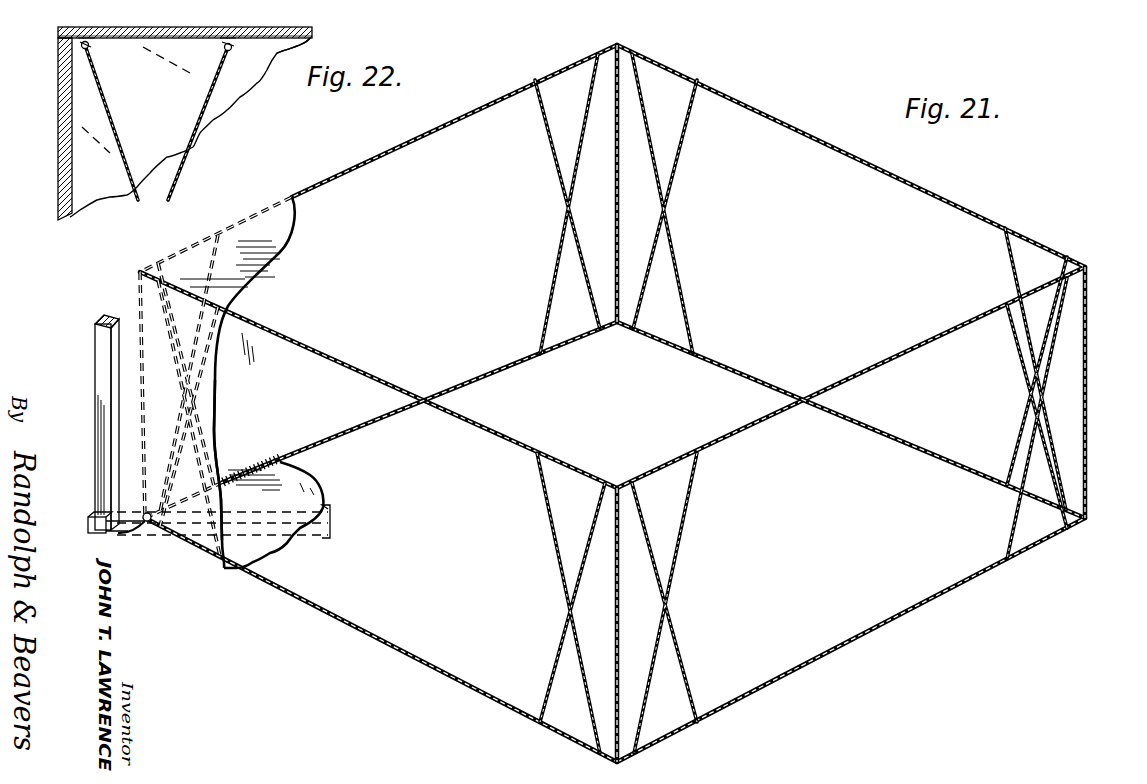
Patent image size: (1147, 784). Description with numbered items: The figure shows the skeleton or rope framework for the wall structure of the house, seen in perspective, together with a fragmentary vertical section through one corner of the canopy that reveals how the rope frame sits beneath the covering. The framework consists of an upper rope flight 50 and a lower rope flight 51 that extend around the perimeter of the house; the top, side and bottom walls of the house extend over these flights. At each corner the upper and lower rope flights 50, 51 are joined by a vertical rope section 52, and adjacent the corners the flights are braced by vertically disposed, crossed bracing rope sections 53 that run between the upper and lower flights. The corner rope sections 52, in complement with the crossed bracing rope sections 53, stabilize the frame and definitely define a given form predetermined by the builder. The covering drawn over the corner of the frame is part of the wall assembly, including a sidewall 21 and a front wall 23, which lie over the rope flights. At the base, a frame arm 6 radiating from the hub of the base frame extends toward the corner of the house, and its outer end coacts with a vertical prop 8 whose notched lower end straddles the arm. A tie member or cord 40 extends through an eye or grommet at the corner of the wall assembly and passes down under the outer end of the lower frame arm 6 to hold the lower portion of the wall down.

In FIG. 21, the arm 6 is at (90, 532).
In FIG. 21, the vertical prop 8 is at (95, 346).
In FIG. 22, the sidewall 21 is at (201, 29).
In FIG. 21, the sidewall 21 is at (257, 312).
In FIG. 22, the front wall 23 is at (57, 107).
In FIG. 21, the front wall 23 is at (210, 422).
In FIG. 21, the tie member or cord 40 is at (147, 526).
In FIG. 22, the upper rope flight 50 is at (60, 40).
In FIG. 21, the upper rope flight 50 is at (403, 148).
In FIG. 21, the lower rope flight 51 is at (487, 376).
In FIG. 22, the vertical rope section 52 is at (71, 168).
In FIG. 21, the vertical rope section 52 is at (619, 212).
In FIG. 22, the crossed bracing rope section 53 is at (210, 102).
In FIG. 21, the crossed bracing rope section 53 is at (572, 168).